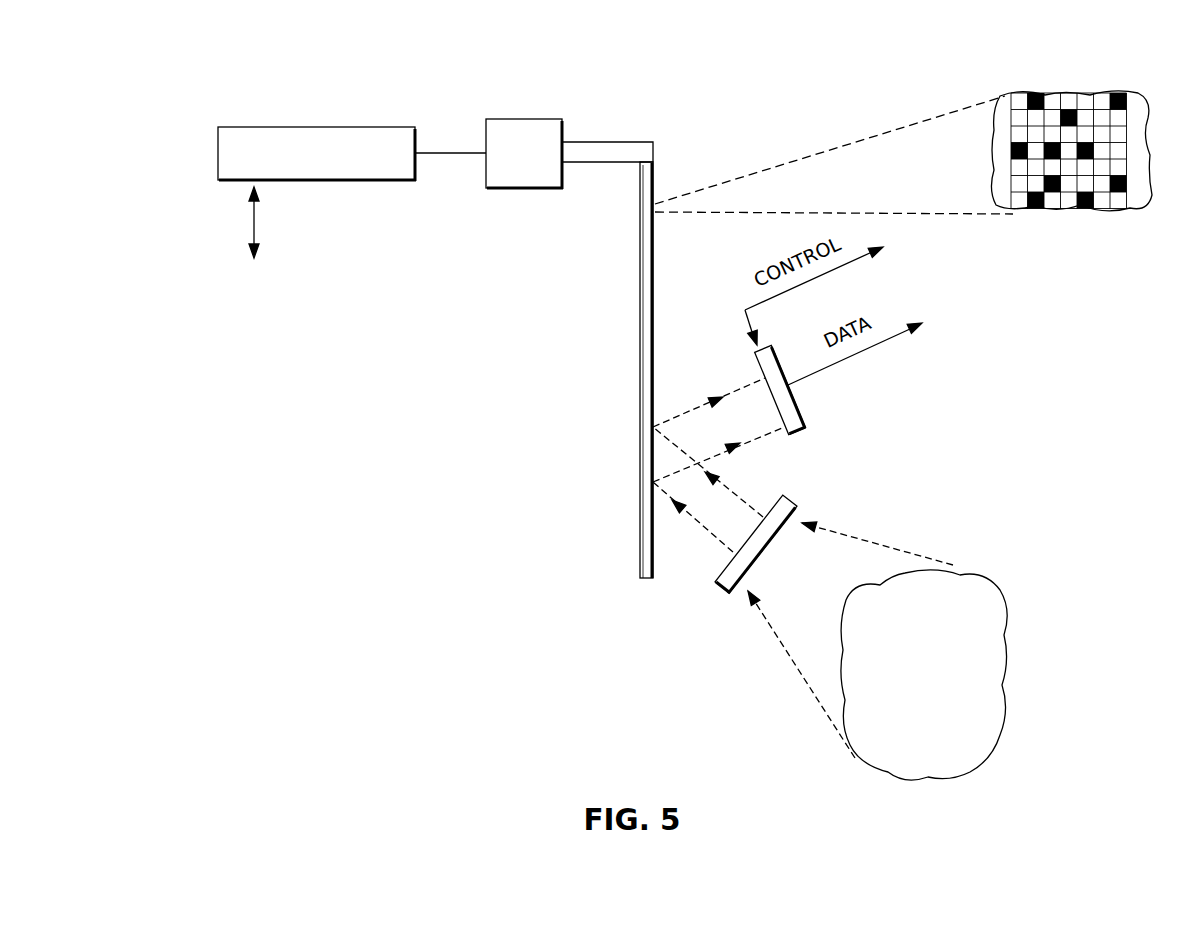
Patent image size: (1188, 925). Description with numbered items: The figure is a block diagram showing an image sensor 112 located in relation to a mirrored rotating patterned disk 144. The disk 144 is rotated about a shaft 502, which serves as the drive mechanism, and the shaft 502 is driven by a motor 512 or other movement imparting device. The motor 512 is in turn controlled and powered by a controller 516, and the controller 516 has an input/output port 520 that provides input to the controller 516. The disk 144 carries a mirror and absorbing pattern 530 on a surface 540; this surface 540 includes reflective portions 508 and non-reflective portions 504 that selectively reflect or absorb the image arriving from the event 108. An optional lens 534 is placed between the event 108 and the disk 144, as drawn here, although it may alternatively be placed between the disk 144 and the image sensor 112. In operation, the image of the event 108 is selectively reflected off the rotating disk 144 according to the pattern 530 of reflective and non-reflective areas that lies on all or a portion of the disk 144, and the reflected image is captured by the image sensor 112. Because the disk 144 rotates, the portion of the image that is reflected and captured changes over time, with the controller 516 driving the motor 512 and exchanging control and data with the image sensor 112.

The controller 516 is at (322, 127).
The motor 512 is at (522, 119).
The shaft 502 is at (607, 142).
The disk 144 is at (640, 515).
The surface 540 is at (656, 550).
The input/output port 520 is at (252, 218).
The image sensor 112 is at (808, 418).
The lens 534 is at (797, 506).
The non-reflective portions 504 is at (1036, 95).
The reflective portions 508 is at (1101, 96).
The mirror and absorbing pattern 530 is at (1140, 102).
The event 108 is at (906, 703).